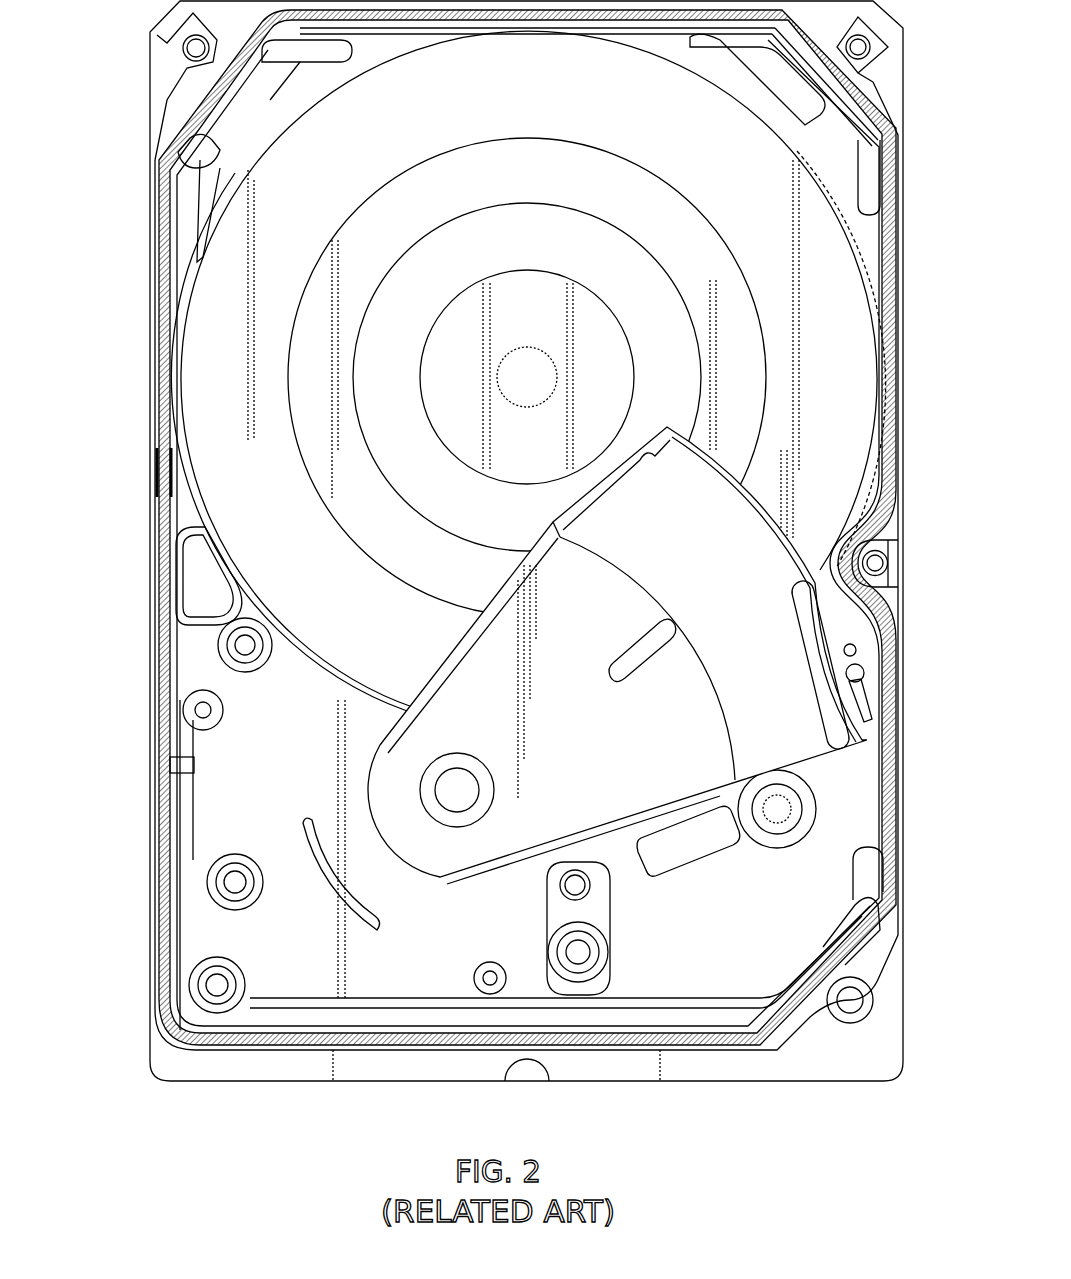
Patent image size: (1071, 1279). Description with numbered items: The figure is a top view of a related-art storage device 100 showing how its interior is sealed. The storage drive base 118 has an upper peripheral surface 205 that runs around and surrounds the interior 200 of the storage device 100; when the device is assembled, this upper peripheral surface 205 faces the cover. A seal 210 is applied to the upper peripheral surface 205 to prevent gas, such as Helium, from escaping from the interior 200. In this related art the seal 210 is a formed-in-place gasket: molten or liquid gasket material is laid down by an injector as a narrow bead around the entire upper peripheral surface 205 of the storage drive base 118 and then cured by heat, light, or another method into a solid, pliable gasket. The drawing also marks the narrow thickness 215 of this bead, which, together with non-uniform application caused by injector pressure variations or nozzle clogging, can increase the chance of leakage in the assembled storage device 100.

The storage device 100 is at (78, 66).
The storage drive base 118 is at (150, 112).
The interior 200 is at (556, 112).
The upper peripheral surface 205 is at (185, 218).
The seal 210 is at (160, 330).
The thickness 215 is at (198, 470).